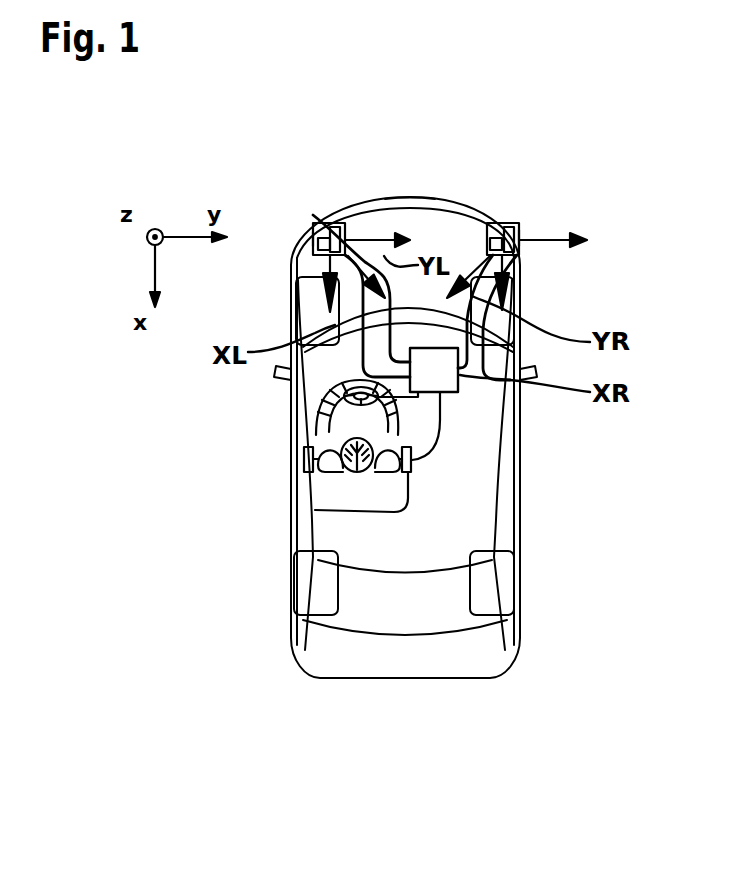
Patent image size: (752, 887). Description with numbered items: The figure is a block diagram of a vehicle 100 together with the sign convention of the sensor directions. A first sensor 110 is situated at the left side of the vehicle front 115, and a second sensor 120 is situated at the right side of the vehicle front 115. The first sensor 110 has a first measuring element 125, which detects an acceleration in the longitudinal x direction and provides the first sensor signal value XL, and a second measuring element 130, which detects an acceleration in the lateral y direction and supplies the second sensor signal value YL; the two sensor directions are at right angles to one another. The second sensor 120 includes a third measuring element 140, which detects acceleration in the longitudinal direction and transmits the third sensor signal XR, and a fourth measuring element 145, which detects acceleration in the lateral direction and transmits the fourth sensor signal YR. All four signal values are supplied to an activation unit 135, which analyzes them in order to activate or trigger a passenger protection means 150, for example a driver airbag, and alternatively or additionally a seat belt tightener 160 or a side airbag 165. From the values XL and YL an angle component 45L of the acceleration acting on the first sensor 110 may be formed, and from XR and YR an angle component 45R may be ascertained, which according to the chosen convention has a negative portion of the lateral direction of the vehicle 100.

The vehicle 100 is at (415, 680).
The first sensor 110 is at (313, 233).
The vehicle front 115 is at (407, 197).
The second sensor 120 is at (509, 223).
The first measuring element 125 is at (313, 240).
The second measuring element 130 is at (313, 215).
The activation unit 135 is at (450, 393).
The third measuring element 140 is at (518, 253).
The fourth measuring element 145 is at (520, 238).
The passenger protection means 150 is at (347, 380).
The seat belt tightener 160 is at (315, 510).
The side airbag 165 is at (304, 459).
The angle component 45L is at (350, 242).
The angle component 45R is at (462, 252).